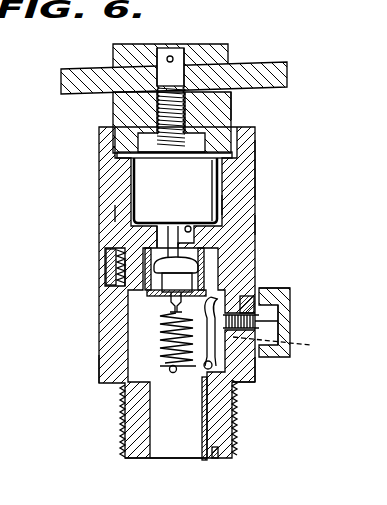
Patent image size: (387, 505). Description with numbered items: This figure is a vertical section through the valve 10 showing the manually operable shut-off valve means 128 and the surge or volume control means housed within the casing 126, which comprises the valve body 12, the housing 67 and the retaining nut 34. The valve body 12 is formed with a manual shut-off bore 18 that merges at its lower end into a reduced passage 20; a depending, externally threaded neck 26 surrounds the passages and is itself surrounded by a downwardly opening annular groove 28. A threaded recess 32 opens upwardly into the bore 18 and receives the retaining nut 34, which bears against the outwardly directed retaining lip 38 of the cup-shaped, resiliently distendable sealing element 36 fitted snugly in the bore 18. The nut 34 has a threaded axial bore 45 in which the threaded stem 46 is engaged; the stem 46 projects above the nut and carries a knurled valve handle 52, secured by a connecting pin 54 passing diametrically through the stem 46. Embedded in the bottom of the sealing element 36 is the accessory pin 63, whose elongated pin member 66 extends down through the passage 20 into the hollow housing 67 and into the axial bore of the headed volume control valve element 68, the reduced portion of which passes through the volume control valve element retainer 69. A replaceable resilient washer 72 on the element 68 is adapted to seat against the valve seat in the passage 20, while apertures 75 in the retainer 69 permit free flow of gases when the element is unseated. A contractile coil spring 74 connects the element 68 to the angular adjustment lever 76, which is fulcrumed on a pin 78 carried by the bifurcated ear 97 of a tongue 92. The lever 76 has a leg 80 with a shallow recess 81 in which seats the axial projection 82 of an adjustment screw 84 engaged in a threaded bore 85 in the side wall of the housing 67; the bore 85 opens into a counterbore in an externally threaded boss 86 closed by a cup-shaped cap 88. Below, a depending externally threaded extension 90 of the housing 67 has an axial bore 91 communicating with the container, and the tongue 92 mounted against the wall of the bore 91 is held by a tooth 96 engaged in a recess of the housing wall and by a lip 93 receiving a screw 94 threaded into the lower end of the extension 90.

The valve 10 is at (99, 152).
The valve body 12 is at (254, 176).
The manual shut-off bore 18 is at (212, 178).
The reduced passage 20 is at (180, 218).
The externally threaded neck 26 is at (143, 278).
The annular groove 28 is at (110, 270).
The threaded recess 32 is at (113, 120).
The retaining nut 34 is at (232, 112).
The sealing element 36 is at (120, 213).
The retaining lip 38 is at (162, 157).
The threaded axial bore 45 is at (157, 115).
The stem 46 is at (170, 56).
The valve handle 52 is at (226, 45).
The connecting pin 54 is at (184, 48).
The accessory pin 63 is at (188, 247).
The pin member 66 is at (157, 236).
The housing 67 is at (100, 366).
The volume control valve element 68 is at (152, 284).
The volume control valve element retainer 69 is at (125, 286).
The resilient washer 72 is at (200, 265).
The coil spring 74 is at (165, 343).
The apertures 75 is at (172, 306).
The angular adjustment lever 76 is at (180, 374).
The pin 78 is at (254, 372).
The leg 80 is at (210, 333).
The shallow recess 81 is at (280, 346).
The axial projection 82 is at (246, 297).
The adjustment screw 84 is at (280, 318).
The threaded bore 85 is at (292, 336).
The externally threaded boss 86 is at (281, 302).
The cap 88 is at (291, 297).
The externally threaded extension 90 is at (126, 418).
The axial bore 91 is at (155, 445).
The tongue 92 is at (203, 418).
The lip 93 is at (203, 463).
The screw 94 is at (214, 462).
The tooth 96 is at (240, 386).
The bifurcated ear 97 is at (233, 410).
The casing 126 is at (261, 227).
The manually operable shut-off valve means 128 is at (228, 207).